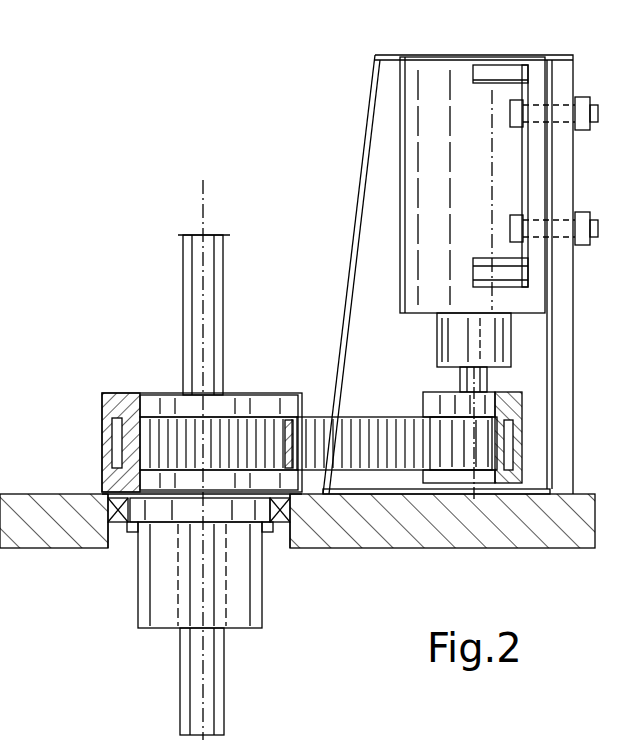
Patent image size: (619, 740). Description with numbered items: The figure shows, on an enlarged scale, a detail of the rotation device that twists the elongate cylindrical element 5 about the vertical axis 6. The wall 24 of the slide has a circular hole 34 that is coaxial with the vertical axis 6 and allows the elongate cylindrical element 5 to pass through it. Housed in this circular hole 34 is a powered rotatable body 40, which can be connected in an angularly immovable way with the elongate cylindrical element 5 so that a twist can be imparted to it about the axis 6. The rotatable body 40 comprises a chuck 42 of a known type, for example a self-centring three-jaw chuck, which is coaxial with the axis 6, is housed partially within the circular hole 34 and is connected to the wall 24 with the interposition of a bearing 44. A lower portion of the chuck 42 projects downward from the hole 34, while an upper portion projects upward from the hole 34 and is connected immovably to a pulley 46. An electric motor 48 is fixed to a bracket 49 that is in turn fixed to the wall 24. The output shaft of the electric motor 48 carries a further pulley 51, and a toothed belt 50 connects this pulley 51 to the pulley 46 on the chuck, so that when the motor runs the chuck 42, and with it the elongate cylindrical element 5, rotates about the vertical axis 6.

The elongate cylindrical element 5 is at (175, 680).
The vertical axis 6 is at (207, 230).
The wall 24 is at (353, 517).
The circular hole 34 is at (160, 533).
The powered rotatable body 40 is at (263, 383).
The chuck 42 is at (160, 603).
The bearing 44 is at (88, 497).
The pulley 46 is at (127, 408).
The electric motor 48 is at (463, 78).
The bracket 49 is at (558, 388).
The toothed belt 50 is at (382, 438).
The pulley 51 is at (430, 407).